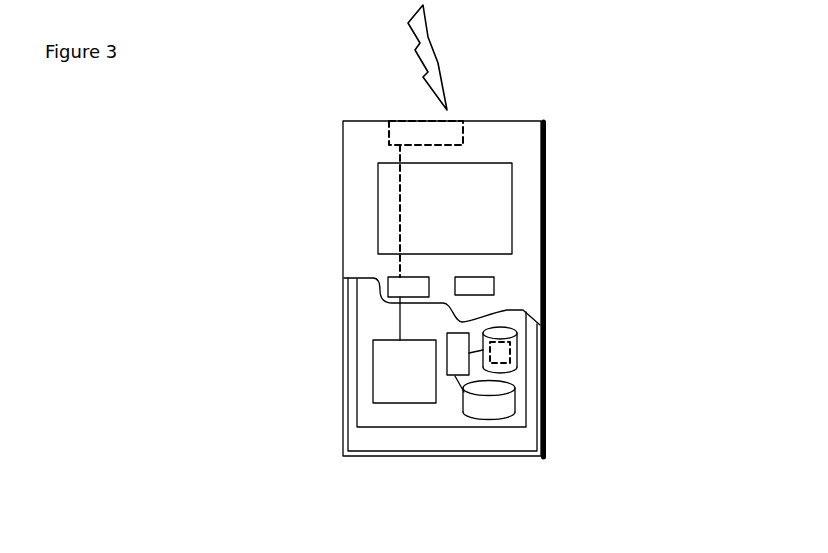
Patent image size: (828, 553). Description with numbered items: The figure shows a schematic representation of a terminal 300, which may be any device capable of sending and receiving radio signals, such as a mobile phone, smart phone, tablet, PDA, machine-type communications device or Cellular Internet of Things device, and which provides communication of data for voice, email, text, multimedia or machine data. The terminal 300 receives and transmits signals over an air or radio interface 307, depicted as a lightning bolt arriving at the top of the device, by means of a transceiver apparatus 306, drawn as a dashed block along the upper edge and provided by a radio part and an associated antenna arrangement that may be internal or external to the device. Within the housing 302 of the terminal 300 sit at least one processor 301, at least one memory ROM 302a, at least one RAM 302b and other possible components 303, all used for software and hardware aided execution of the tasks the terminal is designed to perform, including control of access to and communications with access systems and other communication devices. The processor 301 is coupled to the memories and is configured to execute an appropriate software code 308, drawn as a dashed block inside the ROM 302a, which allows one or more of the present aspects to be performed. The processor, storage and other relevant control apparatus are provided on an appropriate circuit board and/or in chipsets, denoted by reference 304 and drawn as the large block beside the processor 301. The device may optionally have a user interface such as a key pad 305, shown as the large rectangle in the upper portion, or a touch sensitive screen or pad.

The terminal 300 is at (343, 148).
The processor 301 is at (455, 345).
The casing / housing 302 is at (372, 417).
The memory ROM 302a is at (517, 350).
The RAM 302b is at (493, 398).
The other possible components 303 is at (393, 287).
The circuit board and/or chipsets 304 is at (377, 362).
The key pad 305 is at (388, 201).
The transceiver apparatus 306 is at (457, 130).
The air or radio interface 307 is at (447, 75).
The software code 308 is at (494, 354).